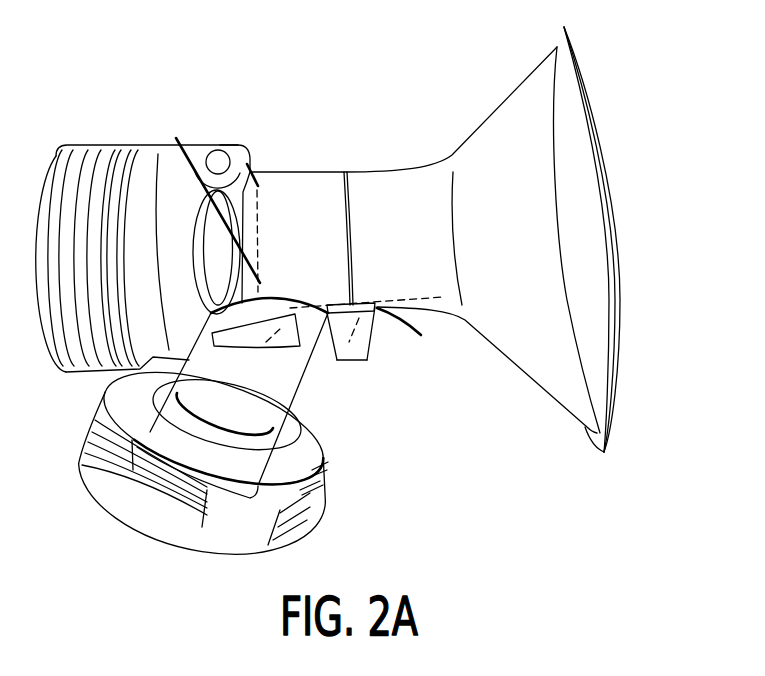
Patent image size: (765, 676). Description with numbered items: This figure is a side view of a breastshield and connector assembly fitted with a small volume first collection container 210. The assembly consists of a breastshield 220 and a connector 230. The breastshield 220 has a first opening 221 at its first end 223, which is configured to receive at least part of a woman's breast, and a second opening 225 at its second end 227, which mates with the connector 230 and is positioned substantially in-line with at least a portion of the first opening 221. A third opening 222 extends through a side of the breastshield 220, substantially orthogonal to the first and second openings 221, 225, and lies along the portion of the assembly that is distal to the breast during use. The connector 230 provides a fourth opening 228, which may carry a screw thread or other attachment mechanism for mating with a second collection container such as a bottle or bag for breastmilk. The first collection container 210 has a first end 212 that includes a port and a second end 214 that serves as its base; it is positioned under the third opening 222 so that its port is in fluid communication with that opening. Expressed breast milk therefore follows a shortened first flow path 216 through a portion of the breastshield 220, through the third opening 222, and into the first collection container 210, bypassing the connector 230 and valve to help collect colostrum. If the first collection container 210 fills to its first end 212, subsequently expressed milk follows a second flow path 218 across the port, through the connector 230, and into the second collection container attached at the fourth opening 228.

The first collection container 210 is at (350, 362).
The first end 212 is at (372, 346).
The second end 214 is at (352, 362).
The first flow path 216 is at (380, 356).
The second flow path 218 is at (288, 306).
The breastshield 220 is at (509, 120).
The first opening 221 is at (608, 183).
The third opening 222 is at (354, 306).
The first end 223 is at (577, 113).
The second opening 225 is at (176, 138).
The second end 227 is at (247, 165).
The fourth opening 228 is at (120, 512).
The connector 230 is at (95, 152).